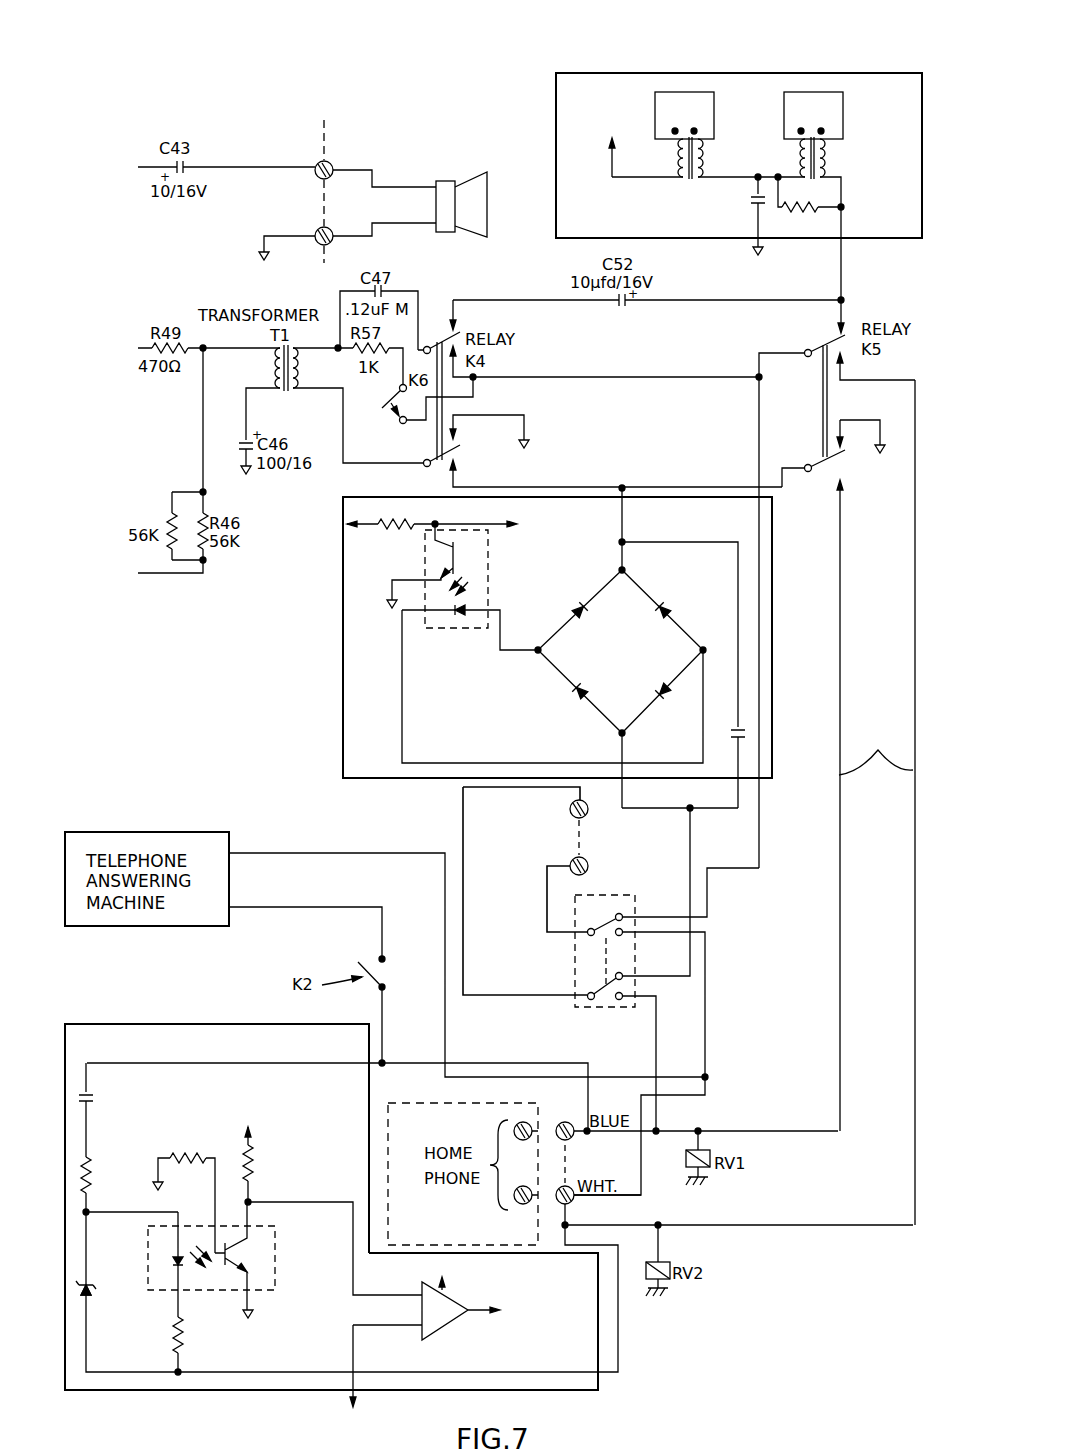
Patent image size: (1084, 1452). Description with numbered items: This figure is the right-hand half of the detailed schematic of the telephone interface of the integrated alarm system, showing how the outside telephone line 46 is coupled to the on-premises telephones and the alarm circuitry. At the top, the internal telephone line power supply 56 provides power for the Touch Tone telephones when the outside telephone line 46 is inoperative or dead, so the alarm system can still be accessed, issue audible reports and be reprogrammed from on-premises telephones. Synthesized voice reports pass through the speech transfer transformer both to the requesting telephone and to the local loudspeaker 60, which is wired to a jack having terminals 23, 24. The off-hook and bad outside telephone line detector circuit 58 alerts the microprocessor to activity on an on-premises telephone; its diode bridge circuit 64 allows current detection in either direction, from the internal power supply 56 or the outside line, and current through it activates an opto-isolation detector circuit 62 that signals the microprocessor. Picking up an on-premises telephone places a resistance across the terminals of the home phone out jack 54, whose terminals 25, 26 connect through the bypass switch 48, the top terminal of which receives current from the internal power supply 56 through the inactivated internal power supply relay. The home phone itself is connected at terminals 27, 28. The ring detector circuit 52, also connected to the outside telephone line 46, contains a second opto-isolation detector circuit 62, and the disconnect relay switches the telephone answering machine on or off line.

The speaker jack terminal 23 is at (335, 167).
The speaker jack ground terminal 24 is at (327, 230).
The local loudspeaker 60 is at (479, 211).
The internal telephone line power supply 56 is at (757, 136).
The off-hook and bad outside telephone line detector circuit 58 is at (535, 648).
The diode bridge circuit 64 is at (631, 637).
The opto-isolation detector circuit 62 is at (425, 560).
The on-premises telephone terminals 54 is at (536, 891).
The home phone out terminal 25 is at (589, 803).
The home phone out terminal 26 is at (590, 862).
The bypass switch 48 is at (575, 1000).
The outside telephone line 46 is at (877, 802).
The home phone terminal (blue) 27 is at (557, 1122).
The home phone terminal (white) 28 is at (572, 1206).
The ring detector circuit 52 is at (337, 1141).